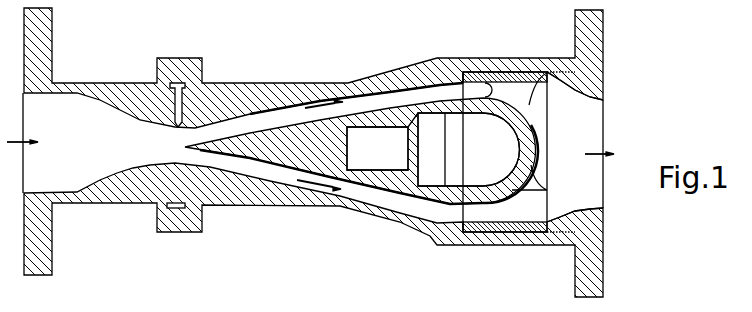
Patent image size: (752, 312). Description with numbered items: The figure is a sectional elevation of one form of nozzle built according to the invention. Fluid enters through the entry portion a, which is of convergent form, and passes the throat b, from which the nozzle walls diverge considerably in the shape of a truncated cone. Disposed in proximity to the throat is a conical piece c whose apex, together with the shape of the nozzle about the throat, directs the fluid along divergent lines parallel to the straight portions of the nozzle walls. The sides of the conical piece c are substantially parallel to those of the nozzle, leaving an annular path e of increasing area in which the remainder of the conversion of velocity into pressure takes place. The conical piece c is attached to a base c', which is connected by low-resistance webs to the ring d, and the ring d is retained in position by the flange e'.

The entry portion a is at (43, 158).
The throat b is at (190, 140).
The conical piece c is at (380, 151).
The base c' is at (513, 138).
The ring d is at (503, 78).
The annular path e is at (346, 154).
The flange e' is at (586, 147).